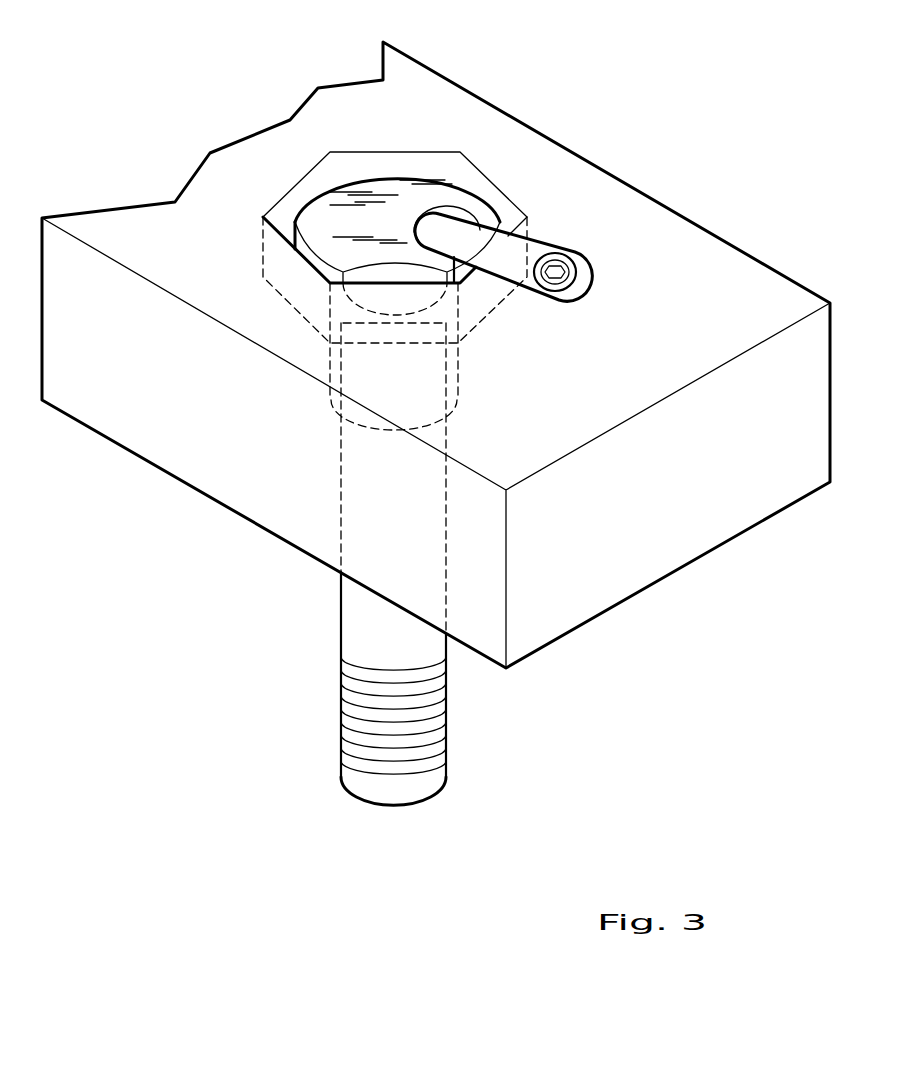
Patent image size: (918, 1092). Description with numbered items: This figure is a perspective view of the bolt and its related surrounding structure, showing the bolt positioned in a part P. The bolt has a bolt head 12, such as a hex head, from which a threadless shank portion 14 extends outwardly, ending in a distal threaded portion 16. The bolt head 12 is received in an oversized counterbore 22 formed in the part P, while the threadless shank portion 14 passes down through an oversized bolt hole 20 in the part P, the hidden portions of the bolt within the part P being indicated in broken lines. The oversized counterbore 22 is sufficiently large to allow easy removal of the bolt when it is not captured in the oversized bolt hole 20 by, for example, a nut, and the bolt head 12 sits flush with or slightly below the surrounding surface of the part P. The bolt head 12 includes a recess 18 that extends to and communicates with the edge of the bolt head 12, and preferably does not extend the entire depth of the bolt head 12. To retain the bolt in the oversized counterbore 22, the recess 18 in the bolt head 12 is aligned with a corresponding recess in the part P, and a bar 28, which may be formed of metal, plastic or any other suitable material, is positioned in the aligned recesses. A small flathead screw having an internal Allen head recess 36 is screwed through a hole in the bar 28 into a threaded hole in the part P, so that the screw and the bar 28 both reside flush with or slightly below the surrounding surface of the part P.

The bolt head 12 is at (377, 173).
The threadless shank portion 14 is at (358, 620).
The distal threaded portion 16 is at (435, 717).
The recess 18 is at (413, 232).
The oversized bolt hole 20 is at (340, 485).
The oversized counterbore 22 is at (293, 217).
The bar 28 is at (507, 240).
The internal Allen head recess 36 is at (553, 256).
The part P is at (747, 287).